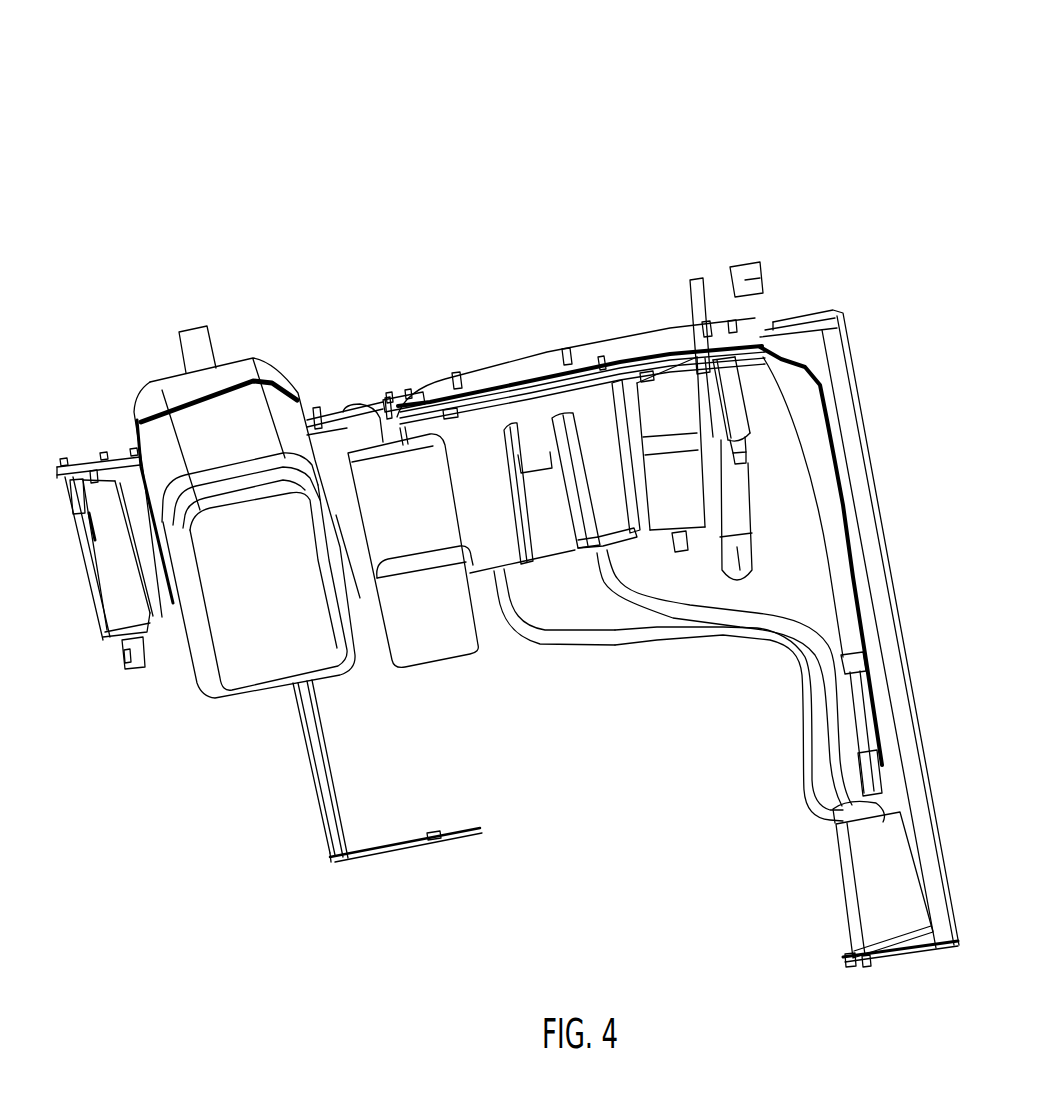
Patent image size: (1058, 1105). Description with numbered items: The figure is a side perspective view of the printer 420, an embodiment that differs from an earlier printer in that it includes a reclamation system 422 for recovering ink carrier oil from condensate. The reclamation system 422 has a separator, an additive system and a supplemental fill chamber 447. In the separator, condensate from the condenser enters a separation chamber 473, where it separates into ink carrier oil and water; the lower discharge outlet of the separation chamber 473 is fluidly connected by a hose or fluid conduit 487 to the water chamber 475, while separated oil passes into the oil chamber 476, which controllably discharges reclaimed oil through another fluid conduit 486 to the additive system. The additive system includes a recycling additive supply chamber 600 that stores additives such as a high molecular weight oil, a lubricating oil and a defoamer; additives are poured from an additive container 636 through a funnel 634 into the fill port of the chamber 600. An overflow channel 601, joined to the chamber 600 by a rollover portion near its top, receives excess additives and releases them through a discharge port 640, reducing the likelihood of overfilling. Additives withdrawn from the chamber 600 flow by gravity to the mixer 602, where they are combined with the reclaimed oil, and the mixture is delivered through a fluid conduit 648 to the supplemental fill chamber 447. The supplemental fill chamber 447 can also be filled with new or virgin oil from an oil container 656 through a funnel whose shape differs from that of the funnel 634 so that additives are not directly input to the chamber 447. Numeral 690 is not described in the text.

The printer 420 is at (298, 100).
The reclamation system 422 is at (504, 197).
The fluid conduit 648 is at (660, 338).
The funnel 634 is at (397, 397).
The oil container 656 is at (255, 683).
The supplemental fill chamber 447 is at (163, 617).
The additive container 636 is at (453, 657).
The recycling additive supply chamber 600 is at (492, 575).
The discharge port 640 is at (610, 645).
The fluid conduit 486 is at (642, 601).
The overflow channel 601 is at (543, 447).
The valve body 690 is at (571, 518).
The oil chamber 476 is at (577, 520).
The separation chamber 473 is at (672, 533).
The water chamber 475 is at (750, 407).
The fluid conduit 487 is at (750, 568).
The mixer 602 is at (867, 880).